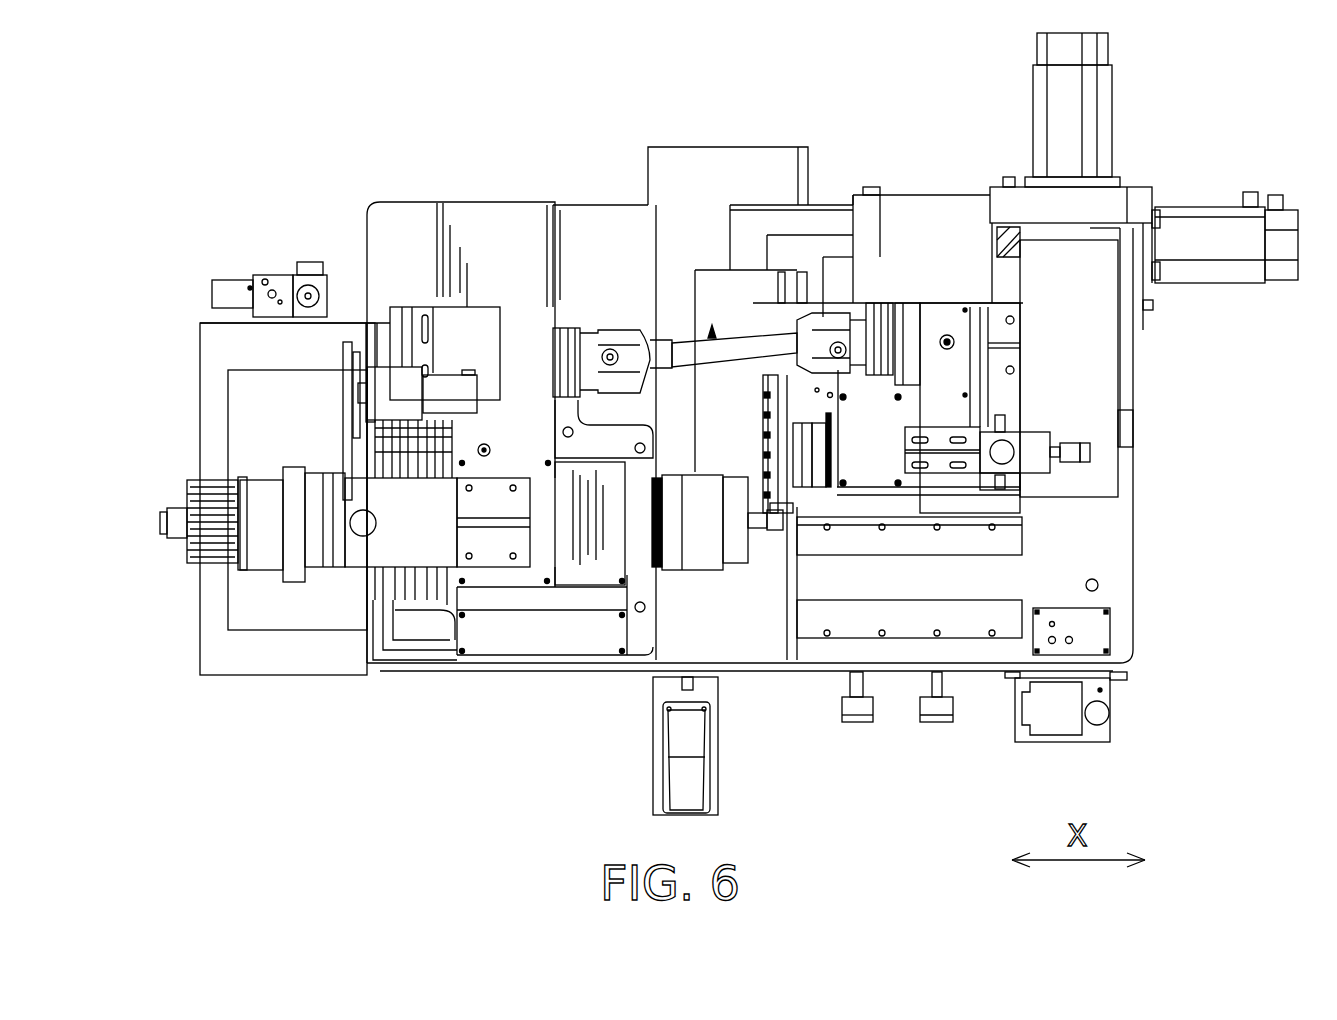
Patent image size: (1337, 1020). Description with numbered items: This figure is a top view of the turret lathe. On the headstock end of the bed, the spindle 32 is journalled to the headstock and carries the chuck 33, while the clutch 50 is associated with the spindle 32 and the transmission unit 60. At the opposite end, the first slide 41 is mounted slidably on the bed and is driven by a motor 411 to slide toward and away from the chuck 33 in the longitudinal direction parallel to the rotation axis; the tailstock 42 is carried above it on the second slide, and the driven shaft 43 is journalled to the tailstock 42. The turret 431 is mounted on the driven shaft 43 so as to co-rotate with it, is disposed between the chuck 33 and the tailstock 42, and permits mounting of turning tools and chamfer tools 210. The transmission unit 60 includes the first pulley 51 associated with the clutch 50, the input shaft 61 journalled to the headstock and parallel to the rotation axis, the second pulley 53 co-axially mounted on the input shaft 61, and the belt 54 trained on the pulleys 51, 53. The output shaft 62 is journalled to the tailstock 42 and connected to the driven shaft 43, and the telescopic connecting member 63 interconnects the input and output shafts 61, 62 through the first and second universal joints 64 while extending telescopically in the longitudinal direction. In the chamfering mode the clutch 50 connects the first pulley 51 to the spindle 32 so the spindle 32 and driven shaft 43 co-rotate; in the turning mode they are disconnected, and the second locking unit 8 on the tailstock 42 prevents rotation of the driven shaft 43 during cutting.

The second locking unit 8 is at (1038, 422).
The spindle 32 is at (655, 530).
The chuck 33 is at (707, 553).
The first slide 41 is at (1050, 488).
The motor 411 is at (1215, 240).
The tailstock 42 is at (925, 345).
The driven shaft 43 is at (817, 490).
The turret 431 is at (797, 490).
The clutch 50 is at (423, 600).
The first pulley 51 is at (350, 463).
The second pulley 53 is at (343, 355).
The belt 54 is at (345, 447).
The transmission unit 60 is at (710, 330).
The input shaft 61 is at (338, 390).
The output shaft 62 is at (893, 330).
The telescopic connecting member 63 is at (735, 335).
The universal joints 64 is at (600, 335).
The chamfer tools 210 is at (775, 457).